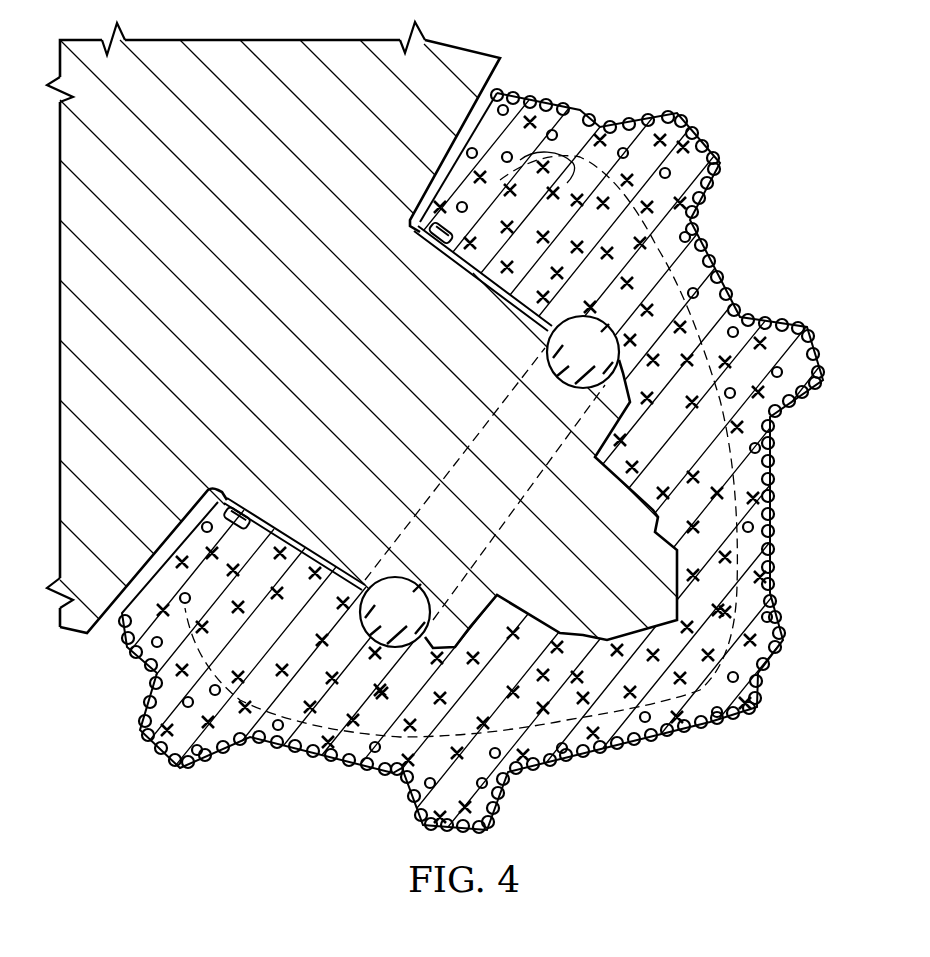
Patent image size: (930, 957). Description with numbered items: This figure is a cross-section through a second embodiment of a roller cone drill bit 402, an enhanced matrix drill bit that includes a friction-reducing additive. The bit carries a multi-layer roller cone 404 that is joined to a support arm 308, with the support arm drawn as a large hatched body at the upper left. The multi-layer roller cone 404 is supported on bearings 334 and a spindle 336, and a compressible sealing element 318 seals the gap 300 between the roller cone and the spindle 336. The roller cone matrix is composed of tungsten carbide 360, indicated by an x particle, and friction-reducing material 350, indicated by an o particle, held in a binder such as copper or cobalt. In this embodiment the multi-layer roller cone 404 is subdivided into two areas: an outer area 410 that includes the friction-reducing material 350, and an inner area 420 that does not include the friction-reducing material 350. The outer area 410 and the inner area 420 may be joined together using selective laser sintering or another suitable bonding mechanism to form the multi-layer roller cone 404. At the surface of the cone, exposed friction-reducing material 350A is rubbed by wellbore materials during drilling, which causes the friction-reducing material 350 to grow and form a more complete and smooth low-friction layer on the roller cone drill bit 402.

The gap 300 is at (509, 294).
The support arm 308 is at (178, 252).
The compressible sealing element 318 is at (450, 245).
The bearings 334 is at (563, 363).
The spindle 336 is at (582, 547).
The friction-reducing material 350 is at (694, 181).
The exposed friction-reducing material 350A is at (703, 205).
The tungsten carbide 360 is at (582, 190).
The roller cone drill bit 402 is at (722, 76).
The multi-layer roller cone 404 is at (652, 457).
The outer area 410 is at (546, 106).
The inner area 420 is at (663, 293).